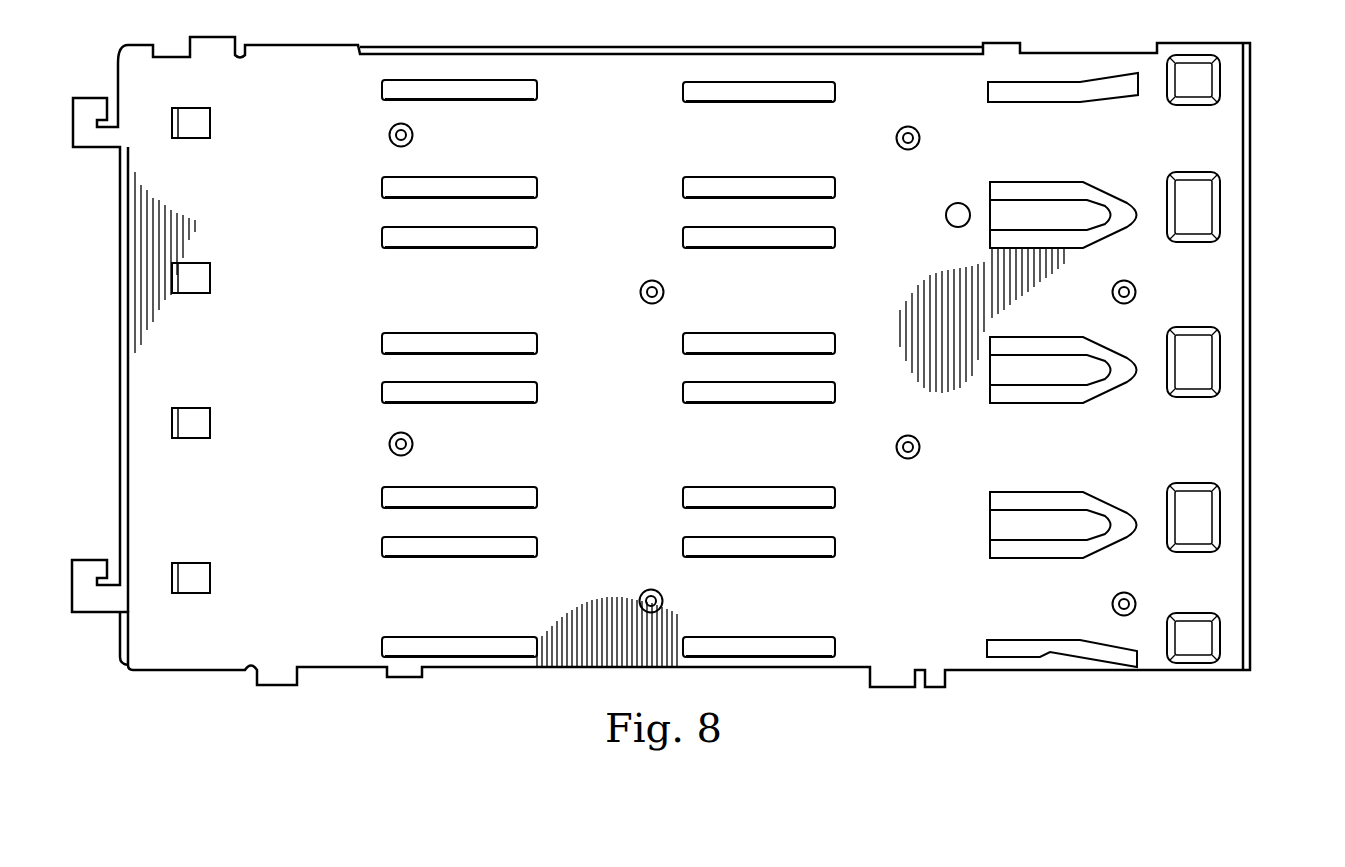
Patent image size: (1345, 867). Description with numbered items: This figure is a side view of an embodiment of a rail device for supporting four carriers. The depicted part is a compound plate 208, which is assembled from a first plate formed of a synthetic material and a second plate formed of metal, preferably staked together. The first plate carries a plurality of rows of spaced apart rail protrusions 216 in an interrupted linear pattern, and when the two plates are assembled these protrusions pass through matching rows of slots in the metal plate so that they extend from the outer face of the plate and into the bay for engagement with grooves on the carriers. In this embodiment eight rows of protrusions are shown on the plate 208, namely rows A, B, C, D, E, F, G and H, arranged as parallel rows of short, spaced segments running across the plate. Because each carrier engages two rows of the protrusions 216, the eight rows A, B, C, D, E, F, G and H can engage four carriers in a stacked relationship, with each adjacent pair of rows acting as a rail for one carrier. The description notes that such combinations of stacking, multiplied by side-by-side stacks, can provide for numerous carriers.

The compound plate 208 is at (1252, 124).
The rail protrusion 216 is at (760, 103).
The row A is at (487, 637).
The row B is at (432, 557).
The row C is at (487, 487).
The row D is at (440, 403).
The row E is at (487, 333).
The row F is at (432, 248).
The row G is at (490, 177).
The row H is at (446, 100).